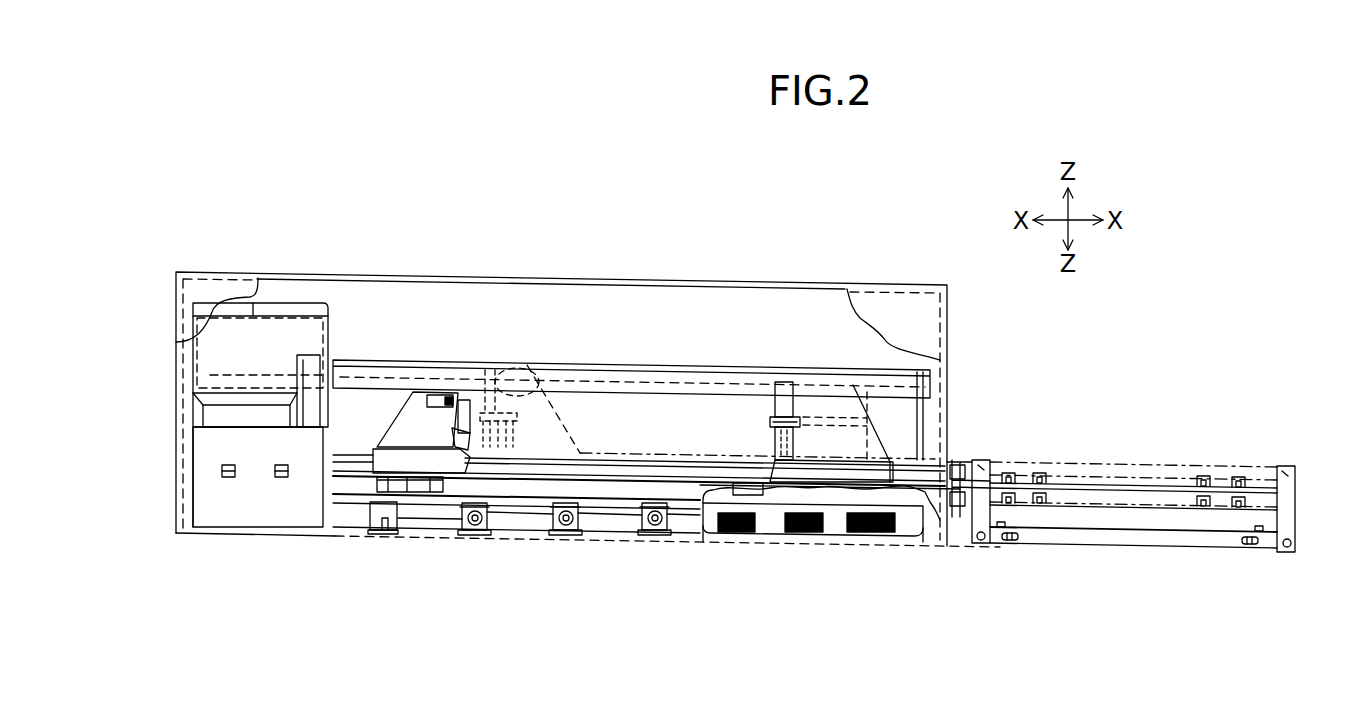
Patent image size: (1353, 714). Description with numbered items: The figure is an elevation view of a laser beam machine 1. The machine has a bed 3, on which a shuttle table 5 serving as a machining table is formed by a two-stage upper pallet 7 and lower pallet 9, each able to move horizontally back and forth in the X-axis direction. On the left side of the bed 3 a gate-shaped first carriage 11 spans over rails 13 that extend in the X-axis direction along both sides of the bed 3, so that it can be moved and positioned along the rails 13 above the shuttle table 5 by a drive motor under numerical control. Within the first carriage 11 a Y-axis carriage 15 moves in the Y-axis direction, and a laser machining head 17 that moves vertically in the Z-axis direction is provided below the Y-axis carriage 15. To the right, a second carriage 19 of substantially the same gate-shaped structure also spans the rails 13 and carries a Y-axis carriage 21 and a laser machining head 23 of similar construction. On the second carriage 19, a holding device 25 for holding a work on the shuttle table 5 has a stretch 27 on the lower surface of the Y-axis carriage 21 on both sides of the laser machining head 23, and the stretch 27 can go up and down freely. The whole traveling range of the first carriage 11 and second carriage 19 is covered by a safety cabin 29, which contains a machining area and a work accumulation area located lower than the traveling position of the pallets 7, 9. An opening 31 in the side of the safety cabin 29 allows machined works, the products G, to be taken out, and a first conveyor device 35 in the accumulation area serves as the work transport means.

The laser beam machine 1 is at (282, 218).
The bed 3 is at (593, 488).
The shuttle table 5 is at (1133, 493).
The upper pallet 7 is at (1106, 463).
The lower pallet 9 is at (1127, 508).
The first carriage 11 is at (412, 390).
The rails 13 is at (533, 470).
The Y-axis carriage 15 is at (472, 368).
The laser machining head 17 is at (450, 436).
The second carriage 19 is at (865, 392).
The Y-axis carriage 21 is at (776, 384).
The laser machining head 23 is at (527, 363).
The holding device 25 is at (770, 414).
The stretch 27 is at (770, 422).
The safety cabin 29 is at (889, 288).
The opening 31 is at (713, 536).
The first conveyor device 35 is at (902, 541).
The products G is at (860, 560).